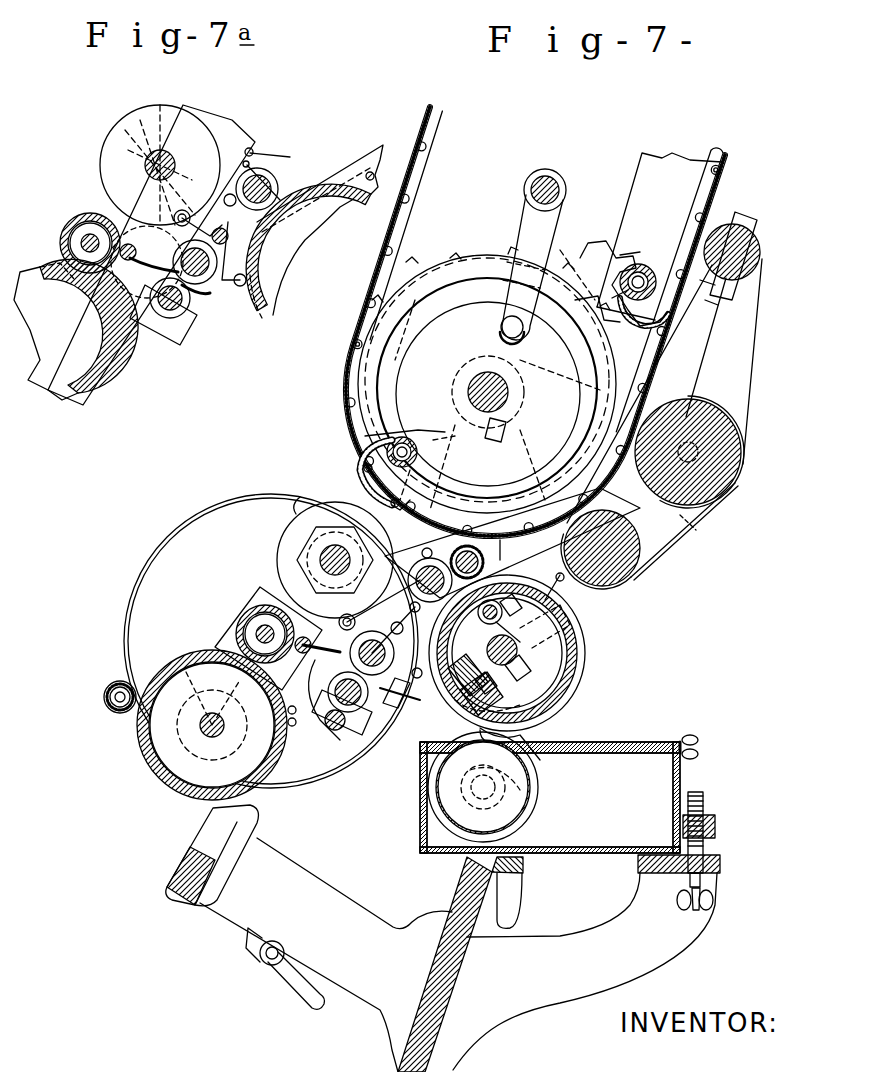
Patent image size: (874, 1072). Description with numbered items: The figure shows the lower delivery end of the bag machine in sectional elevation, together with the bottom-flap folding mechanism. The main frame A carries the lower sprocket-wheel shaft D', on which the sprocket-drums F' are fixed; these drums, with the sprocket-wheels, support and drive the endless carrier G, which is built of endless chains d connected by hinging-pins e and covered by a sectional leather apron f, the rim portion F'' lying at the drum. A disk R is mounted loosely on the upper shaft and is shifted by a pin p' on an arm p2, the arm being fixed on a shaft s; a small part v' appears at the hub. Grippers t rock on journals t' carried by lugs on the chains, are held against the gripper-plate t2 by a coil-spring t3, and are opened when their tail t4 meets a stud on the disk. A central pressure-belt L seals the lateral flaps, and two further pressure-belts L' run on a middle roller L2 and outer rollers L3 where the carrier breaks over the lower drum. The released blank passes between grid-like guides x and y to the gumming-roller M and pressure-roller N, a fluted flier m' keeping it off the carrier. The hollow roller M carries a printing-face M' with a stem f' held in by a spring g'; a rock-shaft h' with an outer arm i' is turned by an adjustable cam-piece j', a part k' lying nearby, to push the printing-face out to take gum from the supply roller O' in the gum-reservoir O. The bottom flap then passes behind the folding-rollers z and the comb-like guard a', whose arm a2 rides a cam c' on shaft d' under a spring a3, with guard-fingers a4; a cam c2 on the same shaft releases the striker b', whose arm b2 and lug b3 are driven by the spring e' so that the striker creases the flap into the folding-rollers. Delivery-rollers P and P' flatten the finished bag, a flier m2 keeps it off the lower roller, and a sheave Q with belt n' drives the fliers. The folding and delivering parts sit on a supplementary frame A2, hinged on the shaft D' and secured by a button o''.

In FIG. 7, the endless carrier G is at (535, 321).
In FIG. 7, the Vaucauson chains d is at (546, 271).
In FIG. 7, the hinging-pins e is at (533, 338).
In FIG. 7, the apron f is at (530, 257).
In FIG. 7, the toothed rim F'' is at (487, 380).
In FIG. 7, the sprocket-drums F' is at (487, 380).
In FIG. 7, the disk R is at (497, 380).
In FIG. 7, the lower sprocket-wheel shaft D' is at (494, 388).
In FIG. 7, the key v' is at (507, 429).
In FIG. 7, the shaft s is at (560, 183).
In FIG. 7, the arm p2 is at (532, 267).
In FIG. 7, the pin p' is at (495, 329).
In FIG. 7, the grippers t is at (495, 387).
In FIG. 7, the gripper-plate t2 is at (530, 393).
In FIG. 7, the coil-spring t3 is at (660, 260).
In FIG. 7, the arm or tail t4 is at (544, 340).
In FIG. 7, the journals t' is at (612, 312).
In FIG. 7, the pressure-belt L is at (666, 400).
In FIG. 7, the outer rollers L3 is at (752, 232).
In FIG. 7, the middle roller L2 is at (700, 400).
In FIG. 7, the pressure-belts L' is at (689, 533).
In FIG. 7, the grid-like guide x is at (512, 543).
In FIG. 7A, the grid-like guide x is at (320, 188).
In FIG. 7, the large sheave Q is at (271, 641).
In FIG. 7, the belt n' is at (303, 495).
In FIG. 7, the cam c' is at (335, 560).
In FIG. 7, the upper delivery-roller P is at (268, 638).
In FIG. 7A, the upper delivery-roller P is at (80, 243).
In FIG. 7, the lower delivery-roller P' is at (212, 725).
In FIG. 7A, the lower delivery-roller P' is at (76, 329).
In FIG. 7, the flier m2 is at (108, 685).
In FIG. 7, the arm a2 is at (318, 645).
In FIG. 7A, the arm a2 is at (136, 248).
In FIG. 7, the guard-fingers a4 is at (335, 678).
In FIG. 7A, the guard-fingers a4 is at (147, 262).
In FIG. 7, the spring a3 is at (296, 692).
In FIG. 7, the comb-like guard a' is at (342, 712).
In FIG. 7A, the comb-like guard a' is at (163, 317).
In FIG. 7, the folding-roller z is at (372, 630).
In FIG. 7A, the folding-roller z is at (195, 256).
In FIG. 7, the grid-like guide y is at (379, 613).
In FIG. 7A, the grid-like guide y is at (235, 254).
In FIG. 7, the pressure-roller N is at (462, 550).
In FIG. 7A, the pressure-roller N is at (284, 176).
In FIG. 7, the flier m' is at (476, 559).
In FIG. 7, the arm i' is at (559, 626).
In FIG. 7, the gumming-roller M is at (521, 635).
In FIG. 7A, the gumming-roller M is at (308, 251).
In FIG. 7, the printing-face M' is at (484, 741).
In FIG. 7, the rock-shaft h' is at (490, 621).
In FIG. 7, the stem f' is at (497, 648).
In FIG. 7, the spring g' is at (472, 678).
In FIG. 7, the cam-piece j' is at (518, 662).
In FIG. 7, the block k' is at (513, 600).
In FIG. 7, the gum-reservoir O is at (570, 820).
In FIG. 7, the gum-supply roller O' is at (483, 787).
In FIG. 7, the frame A is at (440, 965).
In FIG. 7, the supplementary frame A2 is at (212, 830).
In FIG. 7, the button o'' is at (282, 968).
In FIG. 7A, the cam c2 is at (162, 128).
In FIG. 7A, the shaft d' is at (171, 158).
In FIG. 7A, the spring e' is at (271, 171).
In FIG. 7, the striker b' is at (406, 688).
In FIG. 7A, the striker b' is at (201, 305).
In FIG. 7A, the arm b2 is at (198, 221).
In FIG. 7A, the lug b3 is at (224, 212).